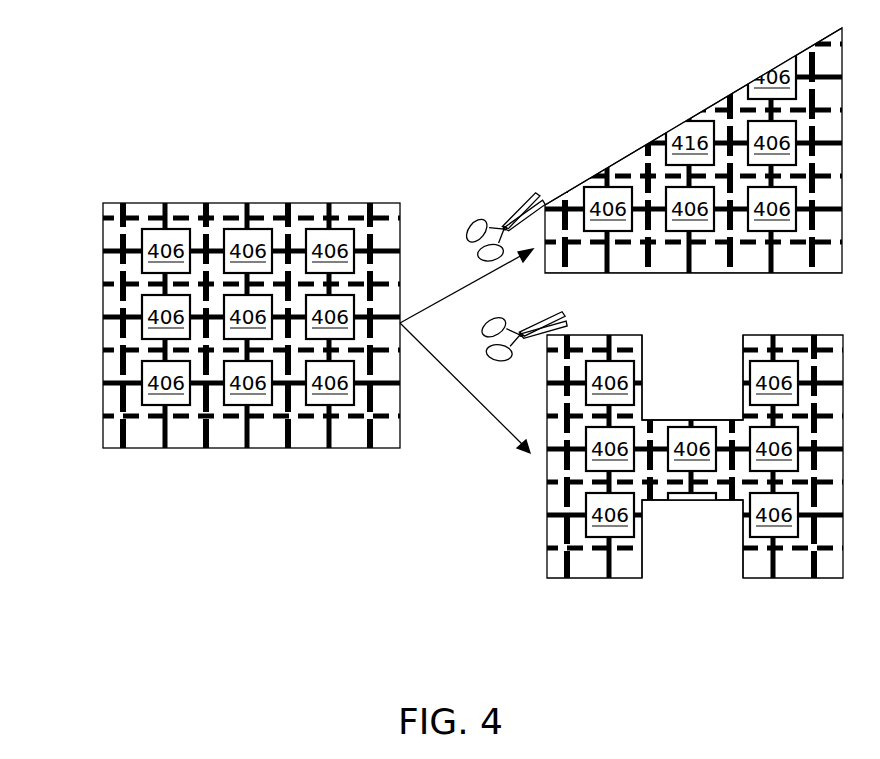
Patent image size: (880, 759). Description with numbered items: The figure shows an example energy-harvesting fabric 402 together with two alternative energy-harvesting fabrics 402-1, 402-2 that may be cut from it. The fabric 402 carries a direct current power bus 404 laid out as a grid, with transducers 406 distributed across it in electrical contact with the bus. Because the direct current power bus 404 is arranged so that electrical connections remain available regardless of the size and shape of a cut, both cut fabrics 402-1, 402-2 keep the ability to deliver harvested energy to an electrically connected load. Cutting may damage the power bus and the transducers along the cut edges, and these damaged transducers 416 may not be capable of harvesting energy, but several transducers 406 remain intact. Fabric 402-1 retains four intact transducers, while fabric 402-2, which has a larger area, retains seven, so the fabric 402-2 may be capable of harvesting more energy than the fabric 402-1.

The energy-harvesting fabric 402 is at (214, 312).
The energy-harvesting fabric 402-1 is at (695, 185).
The energy-harvesting fabric 402-2 is at (697, 441).
The direct current power bus 404 is at (110, 243).
The transducers 406 is at (470, 296).
The damaged transducers 416 is at (778, 82).